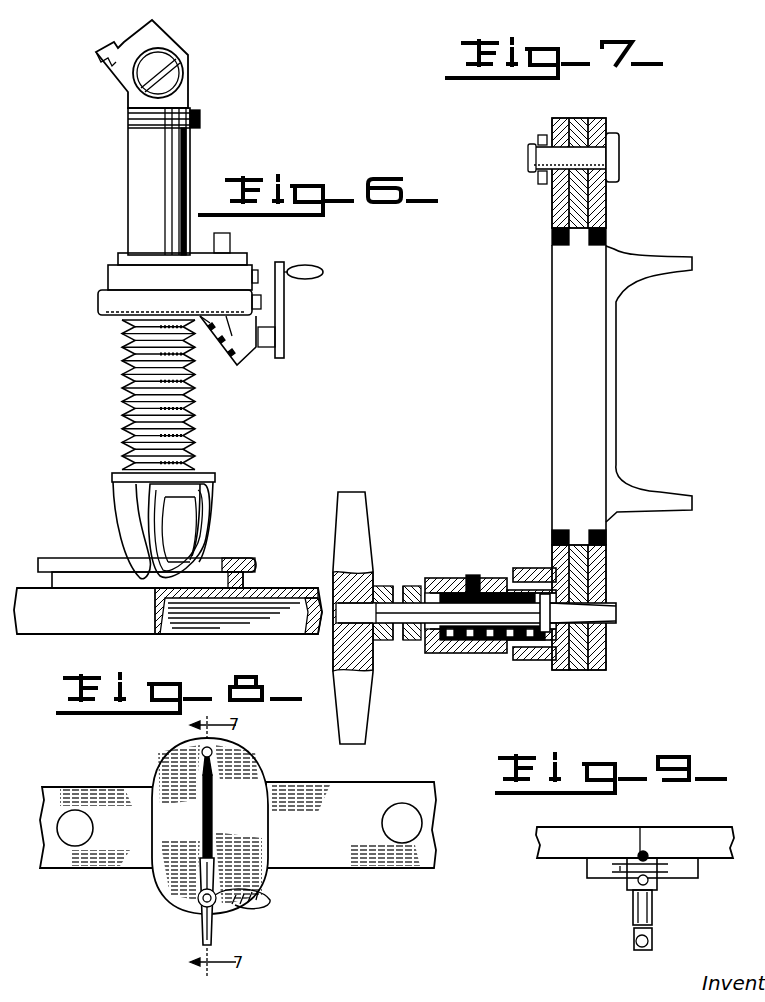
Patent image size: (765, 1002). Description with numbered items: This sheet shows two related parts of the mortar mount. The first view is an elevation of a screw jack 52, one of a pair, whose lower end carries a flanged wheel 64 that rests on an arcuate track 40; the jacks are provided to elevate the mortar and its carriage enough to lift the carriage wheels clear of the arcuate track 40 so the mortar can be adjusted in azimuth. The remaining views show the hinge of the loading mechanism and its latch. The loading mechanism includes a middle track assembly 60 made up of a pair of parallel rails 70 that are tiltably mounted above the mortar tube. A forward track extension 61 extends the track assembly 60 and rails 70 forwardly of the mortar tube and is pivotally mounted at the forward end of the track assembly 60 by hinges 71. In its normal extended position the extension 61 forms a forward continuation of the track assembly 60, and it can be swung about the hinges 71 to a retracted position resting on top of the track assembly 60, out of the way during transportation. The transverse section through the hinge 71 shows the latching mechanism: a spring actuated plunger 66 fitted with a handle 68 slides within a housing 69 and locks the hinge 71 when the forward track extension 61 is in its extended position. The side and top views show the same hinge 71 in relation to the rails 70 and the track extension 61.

In FIG. 6, the arcuate track 40 is at (236, 570).
In FIG. 6, the screw jack 52 is at (366, 231).
In FIG. 8, the middle track assembly 60 is at (376, 867).
In FIG. 8, the forward track extension 61 is at (88, 870).
In FIG. 6, the flanged wheel 64 is at (132, 580).
In FIG. 7, the spring actuated plunger 66 is at (600, 606).
In FIG. 7, the handle 68 is at (340, 499).
In FIG. 9, the handle 68 is at (633, 942).
In FIG. 7, the housing 69 is at (450, 578).
In FIG. 9, the housing 69 is at (631, 904).
In FIG. 7, the rail 70 is at (641, 512).
In FIG. 8, the rail 70 is at (334, 782).
In FIG. 9, the rail 70 is at (663, 826).
In FIG. 7, the hinge 71 is at (552, 347).
In FIG. 8, the hinge 71 is at (159, 892).
In FIG. 9, the hinge 71 is at (679, 878).